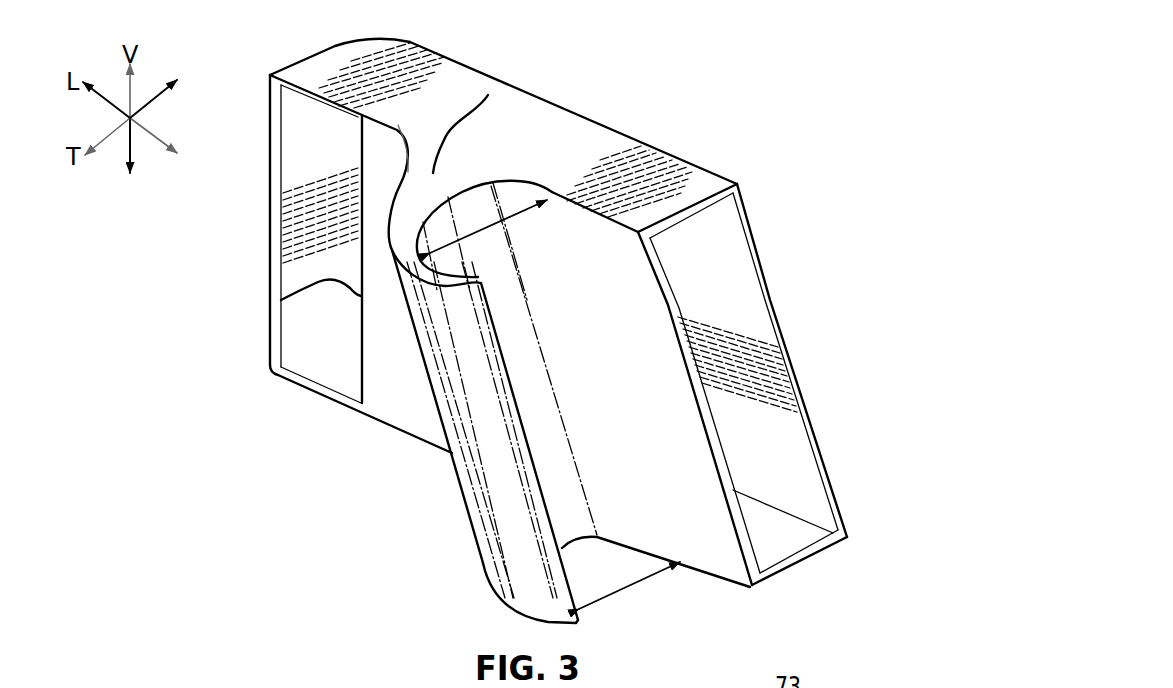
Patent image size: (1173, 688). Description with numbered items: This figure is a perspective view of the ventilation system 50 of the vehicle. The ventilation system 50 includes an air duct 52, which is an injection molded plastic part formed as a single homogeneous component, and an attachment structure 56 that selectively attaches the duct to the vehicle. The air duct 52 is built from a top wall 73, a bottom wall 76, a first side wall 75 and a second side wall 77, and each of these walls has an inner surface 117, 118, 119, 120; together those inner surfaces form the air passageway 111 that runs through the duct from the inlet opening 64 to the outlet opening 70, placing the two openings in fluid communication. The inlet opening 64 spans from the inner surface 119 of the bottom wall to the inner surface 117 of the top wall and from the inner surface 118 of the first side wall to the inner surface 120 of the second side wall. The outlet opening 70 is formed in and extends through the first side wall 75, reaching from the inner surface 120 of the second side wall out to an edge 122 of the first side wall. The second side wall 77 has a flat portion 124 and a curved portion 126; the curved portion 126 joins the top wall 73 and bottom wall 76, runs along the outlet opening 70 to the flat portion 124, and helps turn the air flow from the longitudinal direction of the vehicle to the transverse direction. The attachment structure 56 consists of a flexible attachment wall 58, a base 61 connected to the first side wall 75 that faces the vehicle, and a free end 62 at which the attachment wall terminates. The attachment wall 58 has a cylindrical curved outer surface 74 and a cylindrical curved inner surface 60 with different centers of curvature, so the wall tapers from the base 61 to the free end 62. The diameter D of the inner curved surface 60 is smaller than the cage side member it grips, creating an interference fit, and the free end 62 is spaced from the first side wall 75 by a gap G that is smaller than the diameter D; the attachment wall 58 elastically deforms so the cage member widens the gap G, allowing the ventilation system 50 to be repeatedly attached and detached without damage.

The ventilation system 50 is at (708, 105).
The air duct 52 is at (612, 124).
The attachment structure 56 is at (483, 572).
The flexible attachment wall 58 is at (424, 347).
The curved inner surface 60 is at (455, 198).
The base 61 is at (488, 95).
The free end 62 is at (567, 582).
The inlet opening 64 is at (811, 450).
The outlet opening 70 is at (280, 318).
The top wall 73 is at (517, 113).
The curved outer surface 74 is at (378, 171).
The first side wall 75 is at (722, 567).
The bottom wall 76 is at (803, 561).
The second side wall 77 is at (800, 385).
The air passageway 111 is at (805, 482).
The inner surface of top wall 117 is at (680, 222).
The inner surface of first side wall 118 is at (752, 544).
The inner surface of bottom wall 119 is at (320, 377).
The inner surface of second side wall 120 is at (288, 172).
The edge of first side wall 122 is at (281, 300).
The flat portion 124 is at (703, 164).
The curved portion 126 is at (342, 44).
The diameter of inner curved surface D is at (493, 228).
The gap G is at (637, 577).